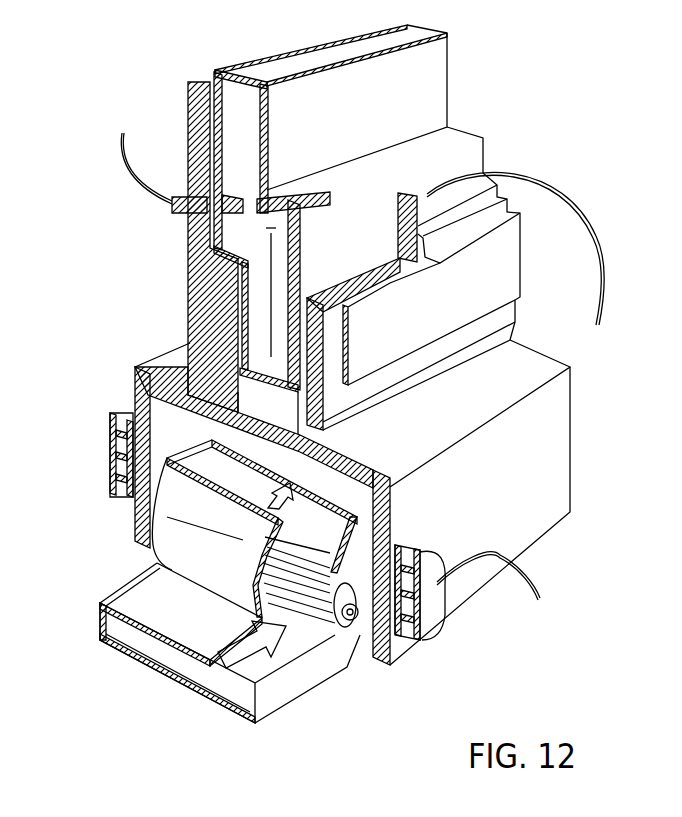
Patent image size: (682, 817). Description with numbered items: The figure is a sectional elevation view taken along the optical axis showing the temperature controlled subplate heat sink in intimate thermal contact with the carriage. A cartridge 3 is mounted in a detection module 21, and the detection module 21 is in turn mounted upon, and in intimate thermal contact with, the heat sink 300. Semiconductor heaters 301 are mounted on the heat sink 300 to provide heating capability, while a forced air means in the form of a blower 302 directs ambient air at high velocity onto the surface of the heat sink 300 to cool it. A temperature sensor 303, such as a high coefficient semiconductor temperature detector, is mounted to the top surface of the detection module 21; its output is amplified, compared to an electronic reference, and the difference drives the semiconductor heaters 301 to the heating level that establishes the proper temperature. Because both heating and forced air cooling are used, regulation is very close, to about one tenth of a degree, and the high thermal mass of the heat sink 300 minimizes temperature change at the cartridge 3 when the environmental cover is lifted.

The cartridge 3 is at (442, 85).
The detection module 21 is at (187, 300).
The heat sink 300 is at (548, 480).
The semiconductor heaters 301 is at (110, 465).
The blower 302 is at (290, 712).
The temperature sensor 303 is at (175, 222).